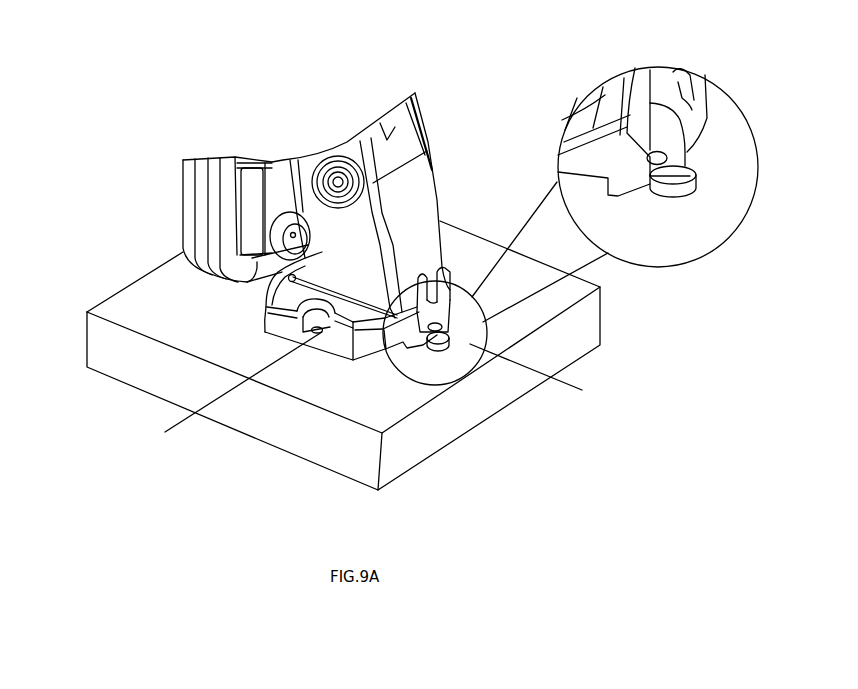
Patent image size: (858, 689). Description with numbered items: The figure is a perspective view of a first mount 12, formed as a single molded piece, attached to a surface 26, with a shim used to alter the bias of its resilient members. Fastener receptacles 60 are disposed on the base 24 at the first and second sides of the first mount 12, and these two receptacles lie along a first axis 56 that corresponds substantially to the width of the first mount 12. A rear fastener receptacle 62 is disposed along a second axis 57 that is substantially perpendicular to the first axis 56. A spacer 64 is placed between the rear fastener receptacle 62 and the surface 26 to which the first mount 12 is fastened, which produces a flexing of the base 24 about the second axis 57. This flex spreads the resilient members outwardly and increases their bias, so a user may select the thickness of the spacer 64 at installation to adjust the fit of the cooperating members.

The first mount 12 is at (448, 181).
The base 24 is at (273, 330).
The surface 26 is at (373, 401).
The first axis 56 is at (168, 436).
The second axis 57 is at (585, 389).
The fastener receptacle 60 is at (318, 333).
The rear fastener receptacle 62 is at (438, 326).
The spacer 64 is at (447, 353).